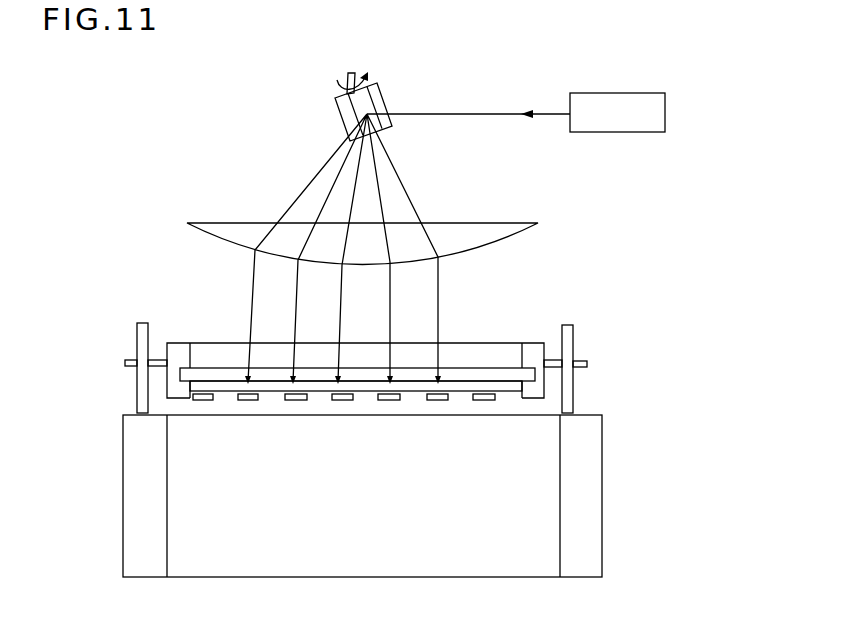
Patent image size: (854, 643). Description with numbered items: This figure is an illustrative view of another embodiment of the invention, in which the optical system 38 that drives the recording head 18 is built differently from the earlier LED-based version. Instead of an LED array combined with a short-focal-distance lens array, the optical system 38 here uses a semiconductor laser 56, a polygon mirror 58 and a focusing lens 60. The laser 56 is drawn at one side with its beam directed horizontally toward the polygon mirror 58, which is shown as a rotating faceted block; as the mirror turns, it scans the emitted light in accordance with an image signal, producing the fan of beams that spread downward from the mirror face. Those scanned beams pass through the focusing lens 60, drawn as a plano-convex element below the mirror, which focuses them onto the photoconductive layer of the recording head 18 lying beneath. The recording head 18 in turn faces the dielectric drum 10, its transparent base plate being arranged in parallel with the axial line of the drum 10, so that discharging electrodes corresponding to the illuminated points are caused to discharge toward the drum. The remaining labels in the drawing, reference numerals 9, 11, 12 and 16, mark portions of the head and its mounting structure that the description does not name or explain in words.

The substrate holder frame 9 is at (219, 375).
The dielectric drum 10 is at (277, 380).
The substrate 11 is at (368, 387).
The supports 12 is at (205, 401).
The posts 16 is at (137, 348).
The recording head 18 is at (347, 403).
The optical system 38 is at (355, 249).
The semiconductor laser 56 is at (658, 112).
The polygon mirror 58 is at (388, 97).
The focusing lens 60 is at (460, 238).